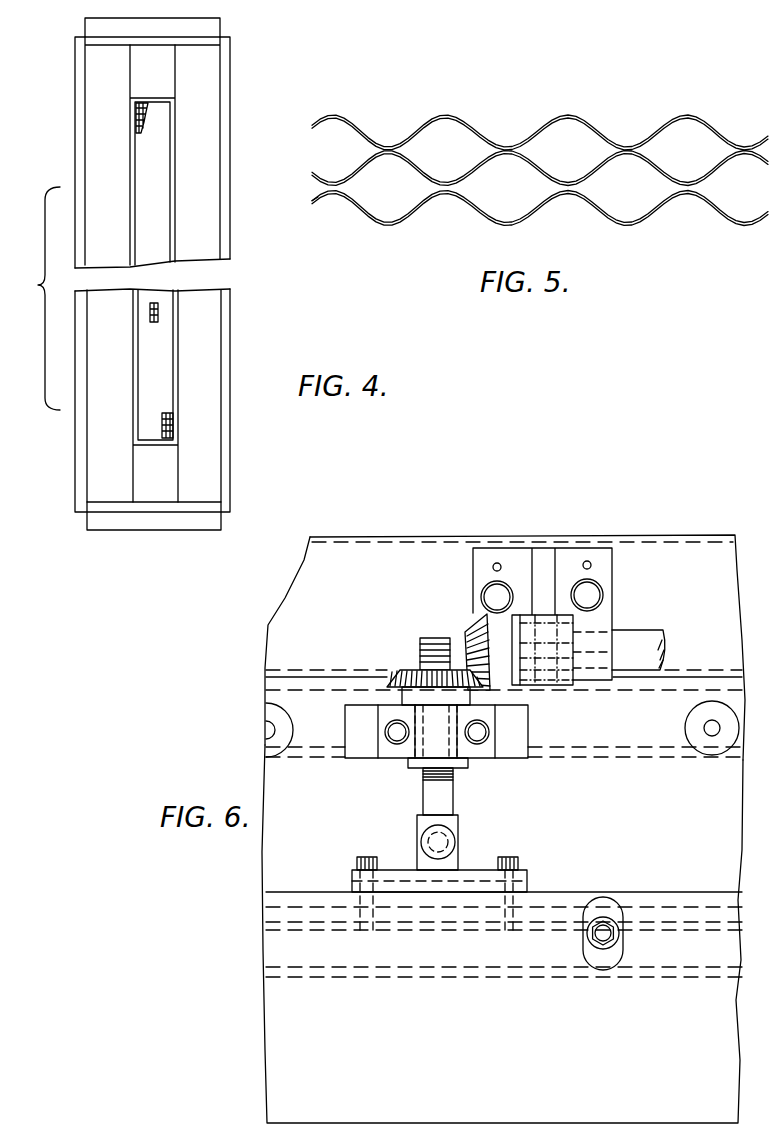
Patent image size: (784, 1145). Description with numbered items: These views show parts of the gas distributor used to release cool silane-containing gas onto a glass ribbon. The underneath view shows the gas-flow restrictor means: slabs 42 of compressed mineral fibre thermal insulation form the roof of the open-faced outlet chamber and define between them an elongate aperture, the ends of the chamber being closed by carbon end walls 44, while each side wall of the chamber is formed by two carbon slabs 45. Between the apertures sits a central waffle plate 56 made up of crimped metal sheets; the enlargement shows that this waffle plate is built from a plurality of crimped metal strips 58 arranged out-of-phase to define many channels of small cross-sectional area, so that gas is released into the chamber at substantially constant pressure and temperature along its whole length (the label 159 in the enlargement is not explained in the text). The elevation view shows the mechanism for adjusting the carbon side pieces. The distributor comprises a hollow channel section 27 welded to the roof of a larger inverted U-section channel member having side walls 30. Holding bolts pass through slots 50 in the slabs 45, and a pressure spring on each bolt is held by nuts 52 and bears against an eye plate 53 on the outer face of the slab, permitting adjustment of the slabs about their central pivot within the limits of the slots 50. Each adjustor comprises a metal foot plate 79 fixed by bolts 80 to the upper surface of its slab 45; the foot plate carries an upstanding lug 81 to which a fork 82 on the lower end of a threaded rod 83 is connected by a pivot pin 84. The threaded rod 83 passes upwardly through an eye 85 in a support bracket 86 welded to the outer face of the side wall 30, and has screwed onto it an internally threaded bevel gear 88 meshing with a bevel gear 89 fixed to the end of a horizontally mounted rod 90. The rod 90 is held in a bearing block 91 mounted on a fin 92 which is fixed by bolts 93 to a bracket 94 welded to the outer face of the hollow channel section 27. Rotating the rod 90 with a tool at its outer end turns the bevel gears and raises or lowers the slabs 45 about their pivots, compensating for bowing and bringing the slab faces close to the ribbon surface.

In FIG. 6, the hollow channel section 27 is at (360, 553).
In FIG. 6, the side walls 30 is at (325, 705).
In FIG. 4, the slabs 42 is at (98, 85).
In FIG. 4, the carbon end walls 44 is at (200, 44).
In FIG. 4, the carbon slabs 45 is at (78, 155).
In FIG. 6, the carbon slabs 45 is at (507, 1054).
In FIG. 6, the slots 50 is at (603, 912).
In FIG. 6, the nuts 52 is at (598, 962).
In FIG. 6, the eye plate 53 is at (595, 905).
In FIG. 4, the central waffle plate 56 is at (163, 400).
In FIG. 5, the crimped metal strips 58 is at (313, 200).
In FIG. 5, the expanded mesh 159 is at (458, 148).
In FIG. 6, the metal foot plate 79 is at (403, 873).
In FIG. 6, the bolts 80 is at (520, 856).
In FIG. 6, the upstanding lug 81 is at (453, 866).
In FIG. 6, the fork 82 is at (450, 822).
In FIG. 6, the threaded rod 83 is at (445, 785).
In FIG. 6, the pivot pin 84 is at (432, 840).
In FIG. 6, the eye 85 is at (402, 750).
In FIG. 6, the support bracket 86 is at (480, 722).
In FIG. 6, the internally threaded bevel gear 88 is at (407, 668).
In FIG. 6, the bevel gear 89 is at (470, 630).
In FIG. 6, the horizontally mounted rod 90 is at (648, 643).
In FIG. 6, the bearing block 91 is at (565, 627).
In FIG. 6, the fin 92 is at (537, 573).
In FIG. 6, the bolts 93 is at (591, 593).
In FIG. 6, the bracket 94 is at (588, 558).